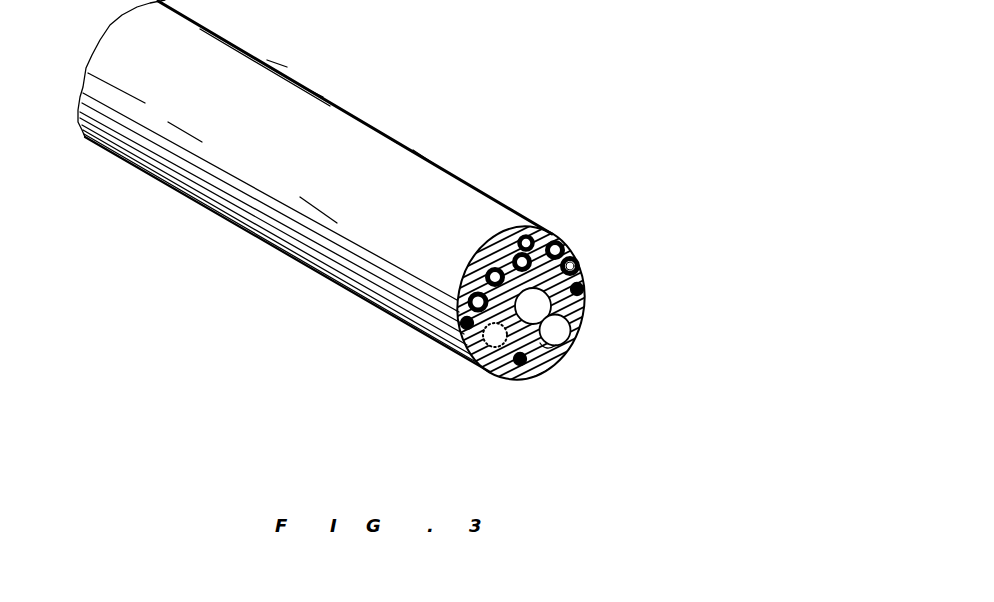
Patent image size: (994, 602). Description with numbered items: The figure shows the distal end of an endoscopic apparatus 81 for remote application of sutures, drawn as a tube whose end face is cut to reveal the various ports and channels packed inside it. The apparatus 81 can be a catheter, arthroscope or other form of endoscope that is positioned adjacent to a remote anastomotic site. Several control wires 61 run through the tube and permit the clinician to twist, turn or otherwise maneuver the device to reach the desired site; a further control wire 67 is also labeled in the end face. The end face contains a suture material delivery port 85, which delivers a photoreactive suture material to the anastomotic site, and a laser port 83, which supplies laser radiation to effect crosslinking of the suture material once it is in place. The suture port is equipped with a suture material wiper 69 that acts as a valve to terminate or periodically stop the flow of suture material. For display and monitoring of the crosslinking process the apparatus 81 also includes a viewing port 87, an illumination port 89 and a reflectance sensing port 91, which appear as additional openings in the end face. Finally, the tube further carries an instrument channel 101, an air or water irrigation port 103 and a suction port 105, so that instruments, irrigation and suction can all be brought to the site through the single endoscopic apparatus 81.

The endoscopic apparatus 81 is at (226, 72).
The control wires 61 is at (528, 237).
The instrument channel 101 is at (551, 242).
The air or water irrigation port 103 is at (566, 250).
The suction port 105 is at (576, 259).
The laser port 83 is at (581, 281).
The control wire 67 is at (584, 294).
The illumination port 89 is at (566, 326).
The valve or wiper 69 is at (548, 352).
The reflectance sensing port 91 is at (458, 293).
The viewing port 87 is at (457, 311).
The suture material delivery port 85 is at (493, 347).